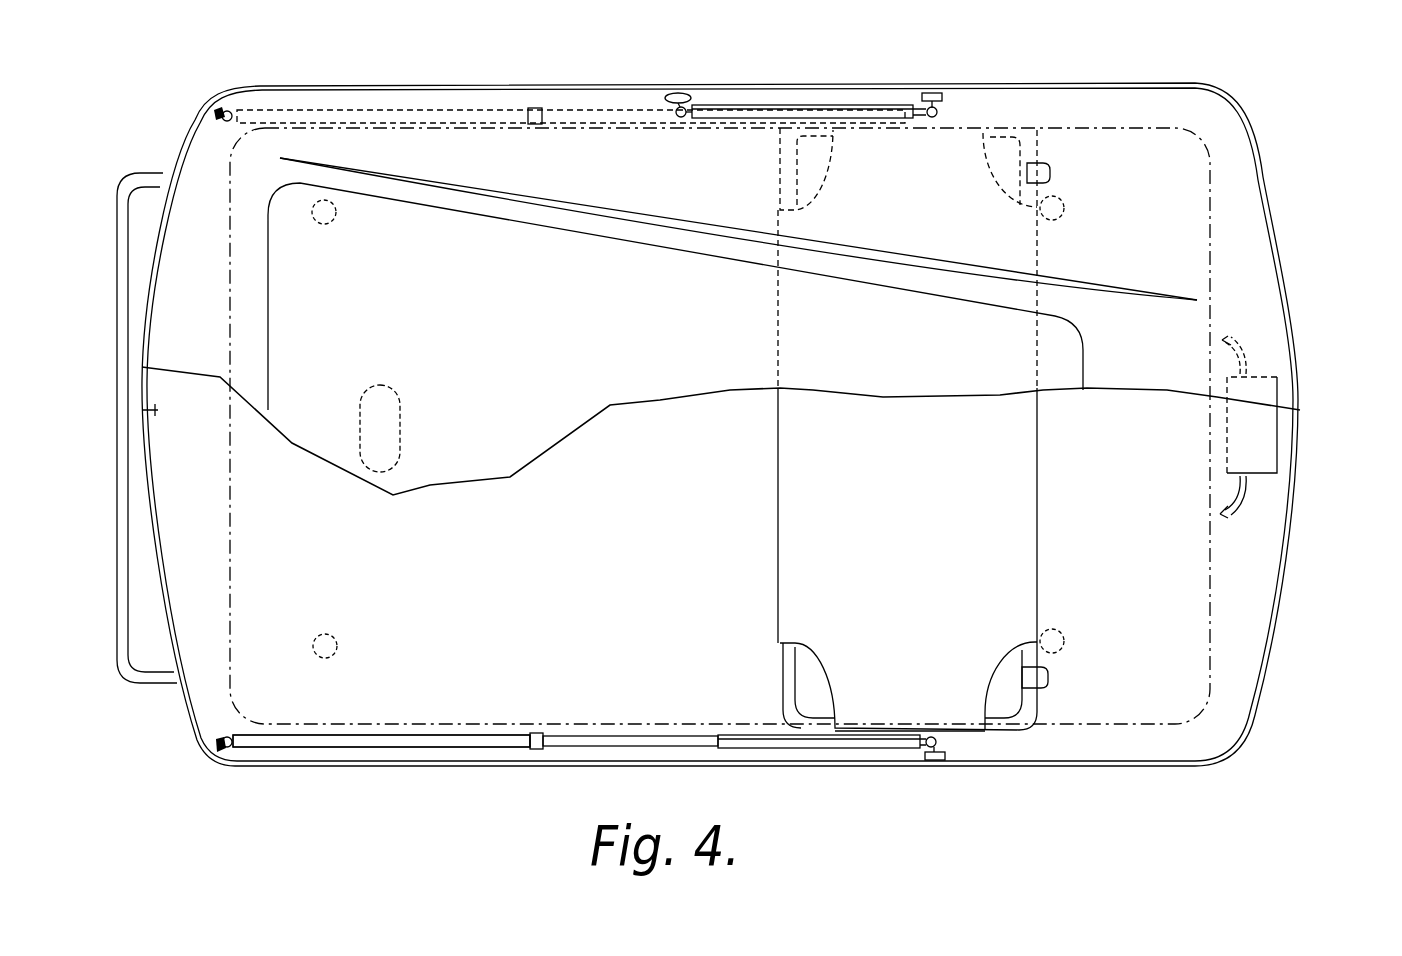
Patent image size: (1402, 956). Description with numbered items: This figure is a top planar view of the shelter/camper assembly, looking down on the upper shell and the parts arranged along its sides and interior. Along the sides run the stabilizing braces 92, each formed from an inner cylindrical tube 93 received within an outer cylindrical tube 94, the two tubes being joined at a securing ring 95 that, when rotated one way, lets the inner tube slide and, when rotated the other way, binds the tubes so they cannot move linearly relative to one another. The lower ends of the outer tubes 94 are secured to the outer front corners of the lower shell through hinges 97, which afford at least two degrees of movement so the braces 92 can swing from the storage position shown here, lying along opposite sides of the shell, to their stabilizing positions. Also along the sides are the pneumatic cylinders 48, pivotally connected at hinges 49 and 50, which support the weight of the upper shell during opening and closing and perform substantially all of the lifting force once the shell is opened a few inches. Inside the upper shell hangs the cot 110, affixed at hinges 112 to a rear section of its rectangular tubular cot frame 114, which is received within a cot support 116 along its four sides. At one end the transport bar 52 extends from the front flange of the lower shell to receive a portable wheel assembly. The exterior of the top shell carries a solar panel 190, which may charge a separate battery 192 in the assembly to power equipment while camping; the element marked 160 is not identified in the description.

The pneumatic cylinder 48 is at (772, 105).
The hinge 49 is at (680, 92).
The hinge 50 is at (937, 90).
The transport bar 52 is at (128, 262).
The stabilizing brace 92 is at (383, 105).
The inner cylindrical tube 93 is at (575, 745).
The outer cylindrical tube 94 is at (415, 740).
The securing ring 95 is at (537, 107).
The hinge 97 is at (228, 108).
The hanging cot 110 is at (1000, 550).
The hinge 112 is at (1040, 173).
The tubular cot frame 114 is at (1007, 725).
The cot support 116 is at (958, 718).
The cover 160 is at (1183, 610).
The solar panel 190 is at (1057, 353).
The battery 192 is at (1263, 445).